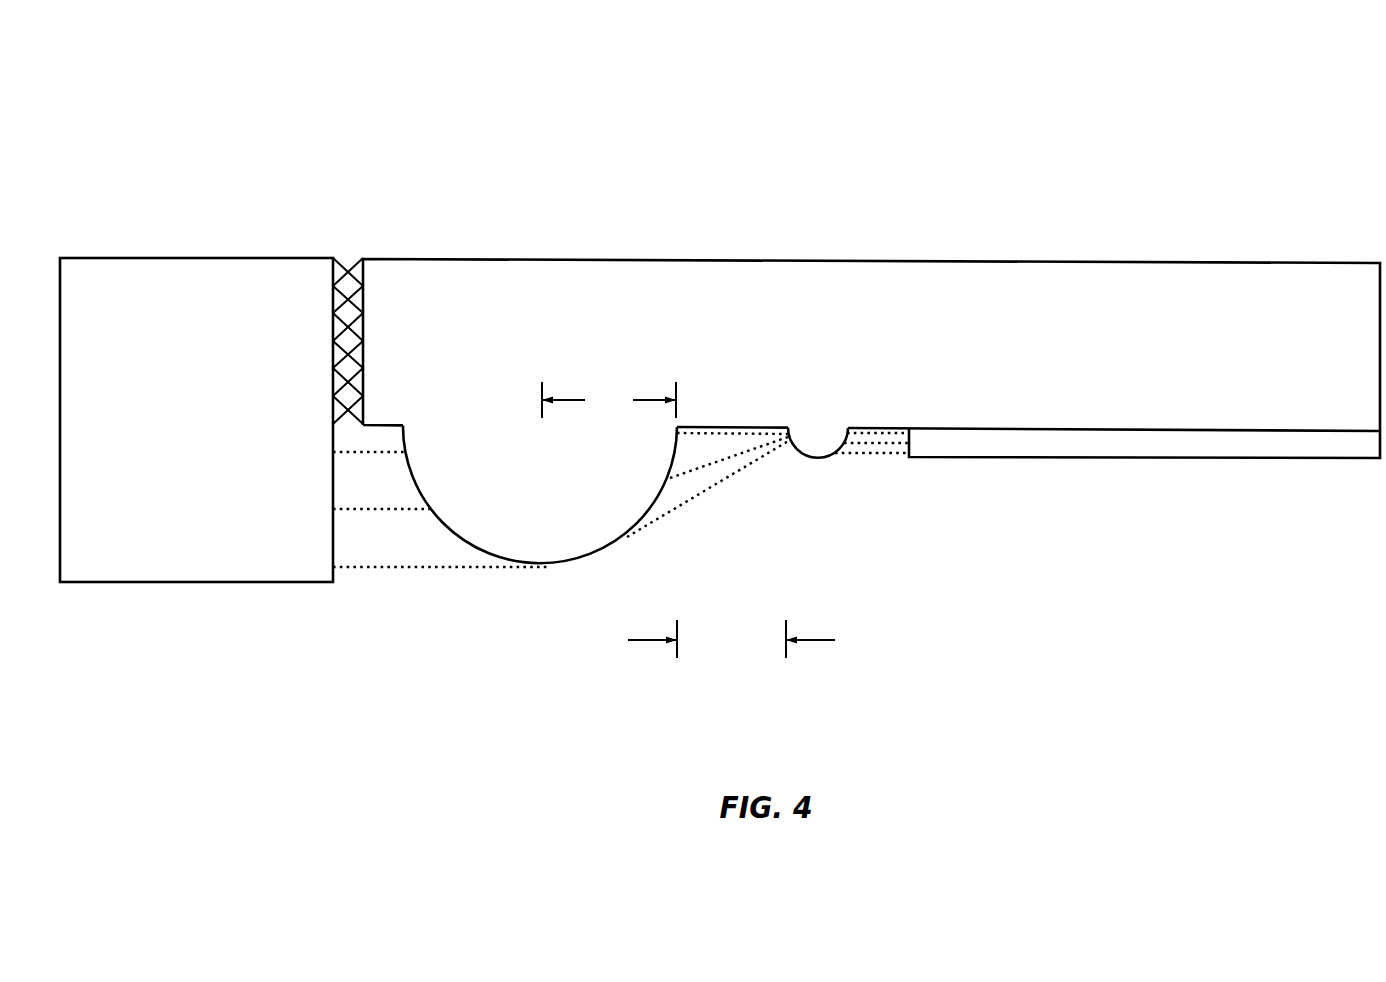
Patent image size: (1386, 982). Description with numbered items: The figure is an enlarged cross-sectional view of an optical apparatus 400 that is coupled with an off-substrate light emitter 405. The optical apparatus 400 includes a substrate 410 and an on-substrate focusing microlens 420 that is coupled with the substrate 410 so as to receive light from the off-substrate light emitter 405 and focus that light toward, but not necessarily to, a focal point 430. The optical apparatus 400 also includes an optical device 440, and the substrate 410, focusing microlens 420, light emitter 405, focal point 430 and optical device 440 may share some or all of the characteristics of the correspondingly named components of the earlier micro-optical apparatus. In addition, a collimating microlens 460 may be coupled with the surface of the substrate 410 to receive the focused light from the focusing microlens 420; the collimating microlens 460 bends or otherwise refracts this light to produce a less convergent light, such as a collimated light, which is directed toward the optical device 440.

The optical apparatus 400 is at (510, 145).
The off-substrate light emitter 405 is at (171, 486).
The substrate 410 is at (850, 379).
The on-substrate focusing microlens 420 is at (560, 552).
The focal point 430 is at (790, 502).
The optical device 440 is at (1210, 459).
The collimating microlens 460 is at (831, 457).